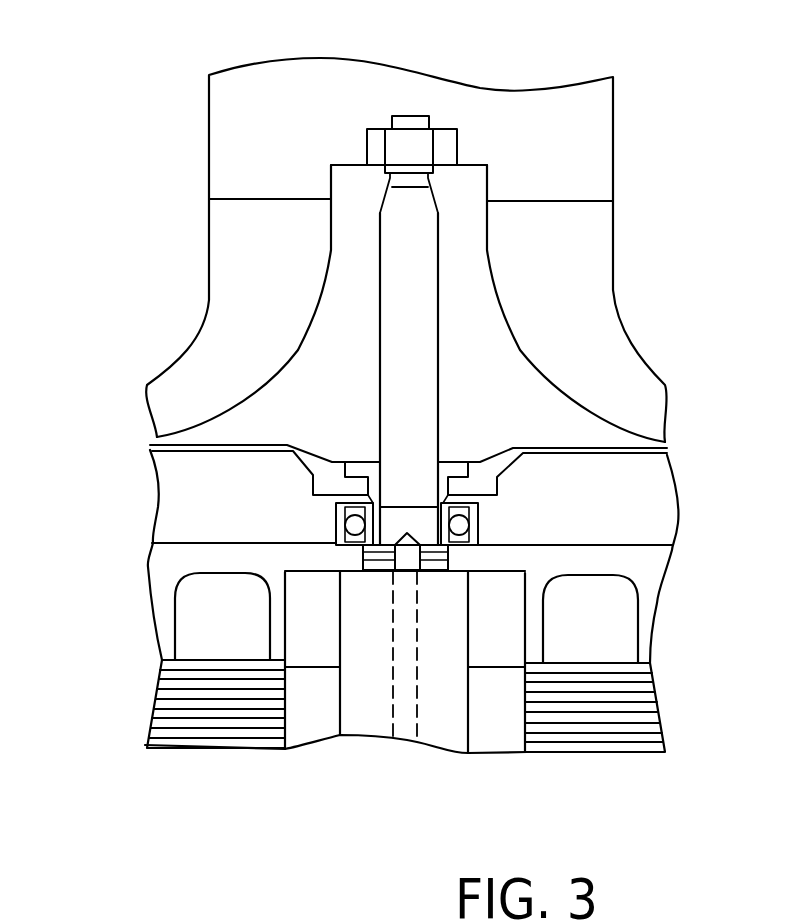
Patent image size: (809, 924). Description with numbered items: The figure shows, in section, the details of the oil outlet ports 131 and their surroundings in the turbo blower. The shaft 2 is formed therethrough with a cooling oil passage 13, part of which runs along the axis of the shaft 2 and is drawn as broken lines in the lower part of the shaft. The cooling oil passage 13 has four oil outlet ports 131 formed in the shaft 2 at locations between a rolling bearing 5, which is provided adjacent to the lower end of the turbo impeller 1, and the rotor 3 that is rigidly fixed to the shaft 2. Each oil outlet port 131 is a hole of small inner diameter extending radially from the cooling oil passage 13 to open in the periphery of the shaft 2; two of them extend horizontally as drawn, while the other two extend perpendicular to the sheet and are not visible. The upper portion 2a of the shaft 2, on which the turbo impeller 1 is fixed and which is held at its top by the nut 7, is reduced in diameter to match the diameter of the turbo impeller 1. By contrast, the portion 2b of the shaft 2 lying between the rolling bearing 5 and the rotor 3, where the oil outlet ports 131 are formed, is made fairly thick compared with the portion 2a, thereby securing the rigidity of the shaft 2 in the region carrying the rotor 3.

The turbo impeller 1 is at (537, 200).
The nut 7 is at (455, 130).
The portion of the shaft 2a is at (440, 340).
The rolling bearing 5 is at (337, 520).
The oil outlet ports 131 is at (363, 558).
The portion of the shaft 2b is at (447, 555).
The shaft 2 is at (340, 706).
The cooling oil passage 13 is at (393, 700).
The rotor 3 is at (528, 717).